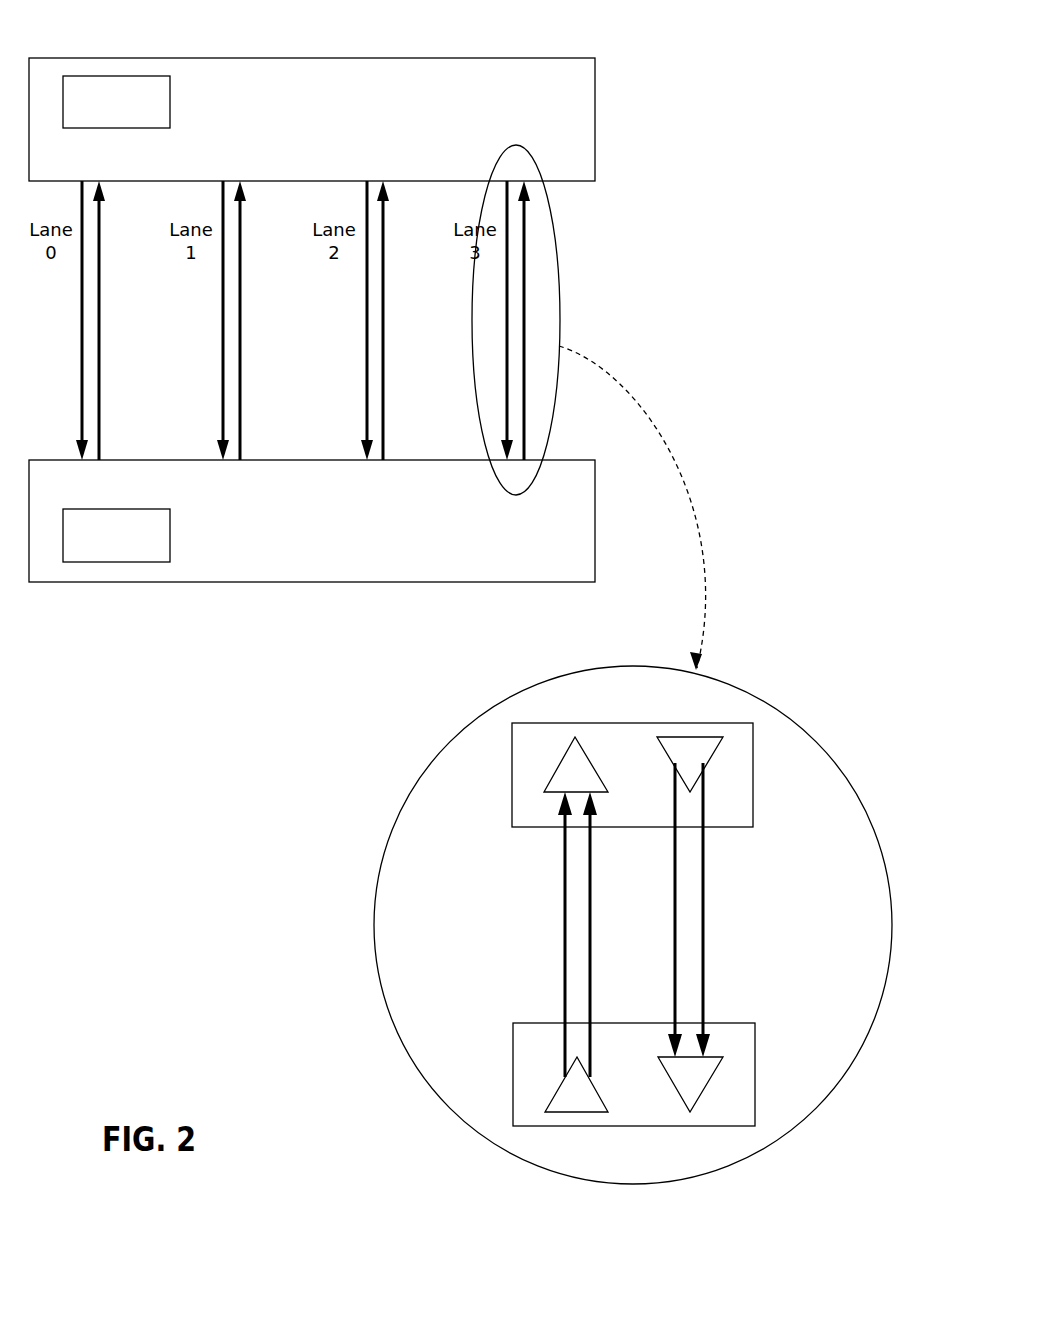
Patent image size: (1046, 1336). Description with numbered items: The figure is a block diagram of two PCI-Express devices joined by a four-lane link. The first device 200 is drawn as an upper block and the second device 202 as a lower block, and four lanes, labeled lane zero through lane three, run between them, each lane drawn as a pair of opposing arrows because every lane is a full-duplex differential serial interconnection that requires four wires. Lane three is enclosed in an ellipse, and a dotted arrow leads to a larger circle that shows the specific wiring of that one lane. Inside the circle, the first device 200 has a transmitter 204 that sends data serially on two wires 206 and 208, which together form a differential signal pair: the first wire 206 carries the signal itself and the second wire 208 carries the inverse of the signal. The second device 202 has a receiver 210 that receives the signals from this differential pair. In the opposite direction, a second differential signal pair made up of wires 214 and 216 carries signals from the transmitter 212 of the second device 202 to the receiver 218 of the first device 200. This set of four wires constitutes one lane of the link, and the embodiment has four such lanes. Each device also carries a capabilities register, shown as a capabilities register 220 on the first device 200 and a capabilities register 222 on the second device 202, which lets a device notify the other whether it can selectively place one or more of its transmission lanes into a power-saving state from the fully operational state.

The Device 1 200 is at (365, 58).
The Device 2 202 is at (367, 582).
The transmitter 204 is at (690, 764).
The first wire 206 is at (659, 910).
The second wire 208 is at (718, 910).
The receiver 210 is at (690, 1084).
The transmitter 212 is at (576, 1084).
The wire 214 is at (548, 934).
The wire 216 is at (606, 934).
The receiver 218 is at (576, 764).
The capabilities register 220 is at (133, 76).
The capabilities register 222 is at (133, 562).